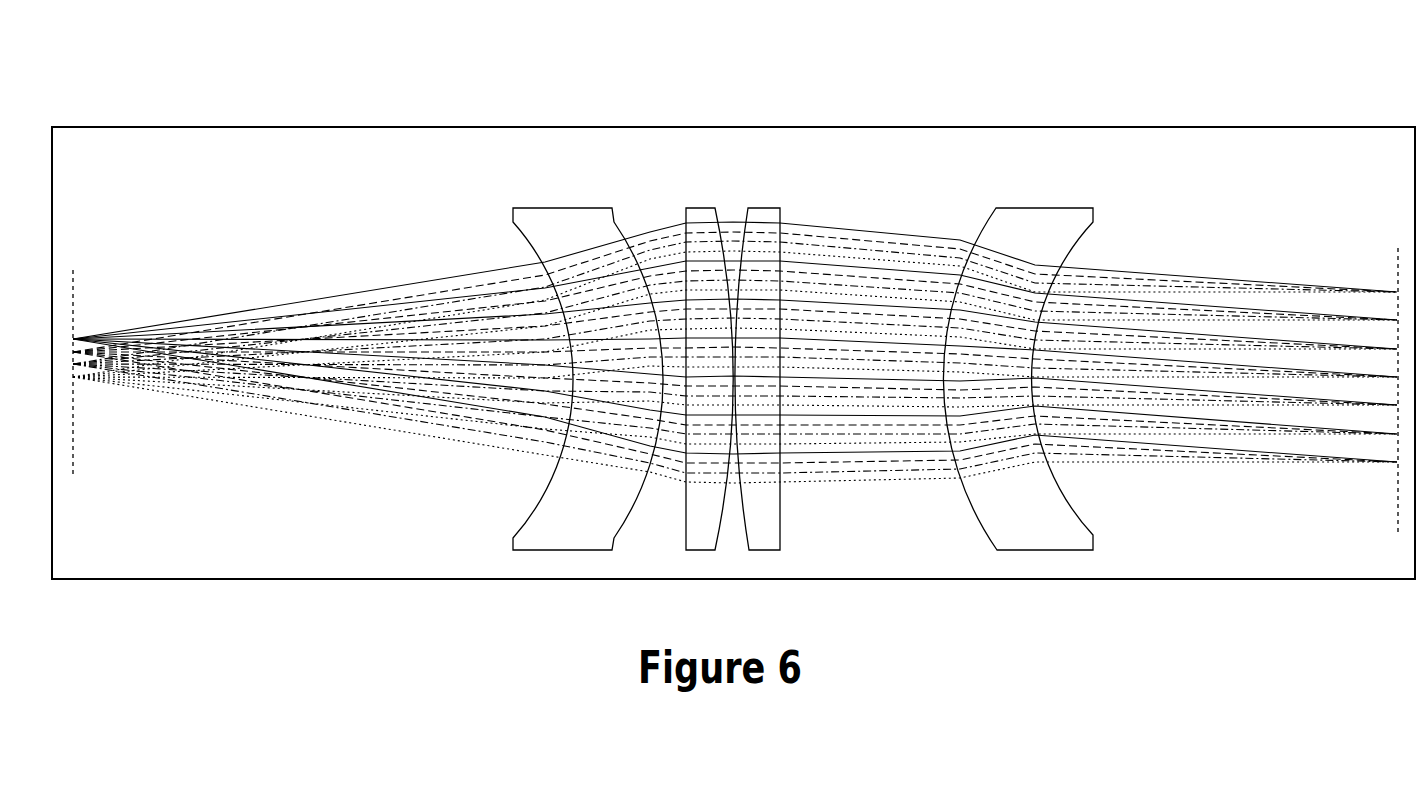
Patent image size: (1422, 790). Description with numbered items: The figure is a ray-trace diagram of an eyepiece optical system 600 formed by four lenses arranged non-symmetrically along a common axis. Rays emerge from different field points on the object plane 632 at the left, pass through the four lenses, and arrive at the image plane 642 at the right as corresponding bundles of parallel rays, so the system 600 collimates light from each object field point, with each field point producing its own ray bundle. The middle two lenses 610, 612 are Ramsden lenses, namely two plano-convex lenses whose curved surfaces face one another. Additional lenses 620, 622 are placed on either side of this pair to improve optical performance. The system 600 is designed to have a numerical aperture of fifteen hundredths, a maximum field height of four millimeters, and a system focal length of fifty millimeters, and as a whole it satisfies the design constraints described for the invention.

The optical system 600 is at (226, 86).
The lens 610 is at (685, 502).
The lens 612 is at (780, 537).
The additional lens 620 is at (530, 507).
The additional lens 622 is at (1082, 515).
The object plane 632 is at (73, 447).
The image plane 642 is at (1396, 257).